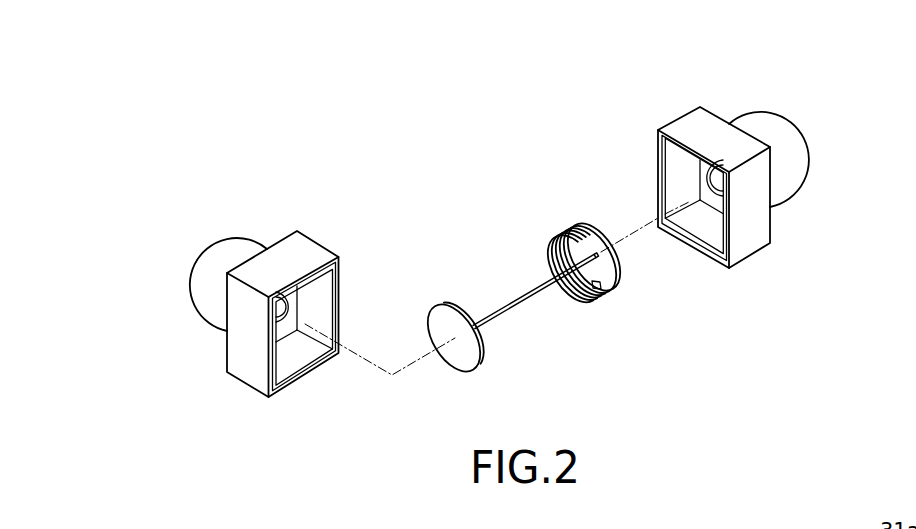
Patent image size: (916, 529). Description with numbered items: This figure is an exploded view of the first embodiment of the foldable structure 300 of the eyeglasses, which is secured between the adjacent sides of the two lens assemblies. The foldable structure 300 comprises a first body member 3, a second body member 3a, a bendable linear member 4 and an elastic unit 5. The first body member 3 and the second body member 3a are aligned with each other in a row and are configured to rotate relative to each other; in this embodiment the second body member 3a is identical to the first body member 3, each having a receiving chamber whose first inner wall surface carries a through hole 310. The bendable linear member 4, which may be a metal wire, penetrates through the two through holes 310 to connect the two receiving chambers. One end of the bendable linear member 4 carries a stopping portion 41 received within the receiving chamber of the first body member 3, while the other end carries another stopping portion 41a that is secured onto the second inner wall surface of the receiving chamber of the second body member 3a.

The foldable structure 300 is at (491, 132).
The first body member 3 is at (794, 214).
The second body member 3a is at (300, 210).
The through hole 310 is at (290, 307).
The bendable linear member 4 is at (510, 277).
The stopping portion 41 is at (603, 228).
The another stopping portion 41a is at (465, 357).
The elastic unit 5 is at (547, 251).